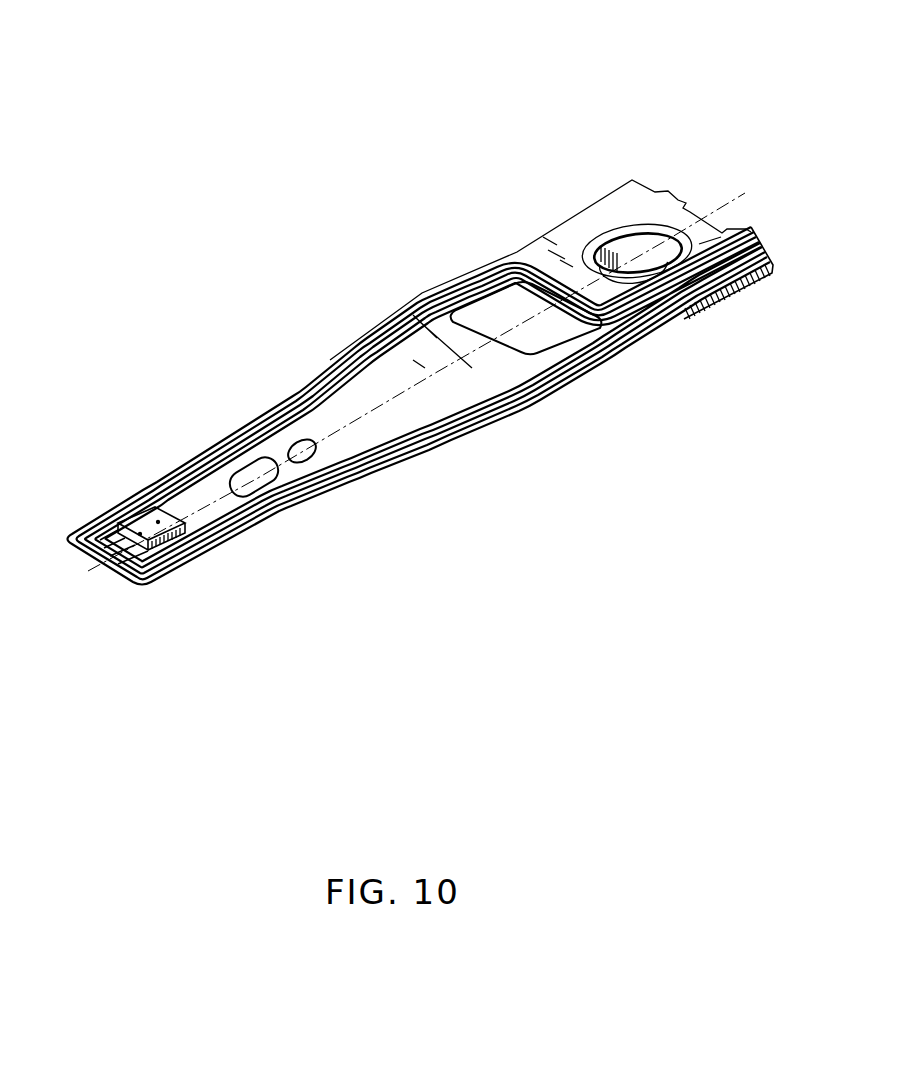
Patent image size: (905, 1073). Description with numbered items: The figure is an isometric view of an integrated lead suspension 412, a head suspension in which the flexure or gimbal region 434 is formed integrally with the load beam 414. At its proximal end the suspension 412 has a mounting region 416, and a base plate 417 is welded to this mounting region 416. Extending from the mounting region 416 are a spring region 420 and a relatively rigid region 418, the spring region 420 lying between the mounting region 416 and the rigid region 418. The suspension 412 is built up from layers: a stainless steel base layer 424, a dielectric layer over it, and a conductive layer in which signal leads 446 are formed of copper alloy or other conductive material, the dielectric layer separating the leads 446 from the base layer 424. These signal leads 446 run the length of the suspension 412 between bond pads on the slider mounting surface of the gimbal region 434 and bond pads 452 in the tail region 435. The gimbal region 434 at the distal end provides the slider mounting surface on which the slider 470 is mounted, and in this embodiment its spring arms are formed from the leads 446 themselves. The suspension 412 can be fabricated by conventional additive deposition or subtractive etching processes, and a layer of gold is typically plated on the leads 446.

The integrated lead suspension 412 is at (176, 305).
The load beam 414 is at (472, 380).
The mounting region 416 is at (590, 207).
The base plate 417 is at (703, 311).
The rigid region 418 is at (437, 437).
The spring region 420 is at (614, 364).
The base layer 424 is at (343, 433).
The gimbal region 434 is at (172, 578).
The tail region 435 is at (767, 279).
The signal leads 446 is at (280, 503).
The bond pads 452 is at (778, 247).
The slider 470 is at (140, 523).